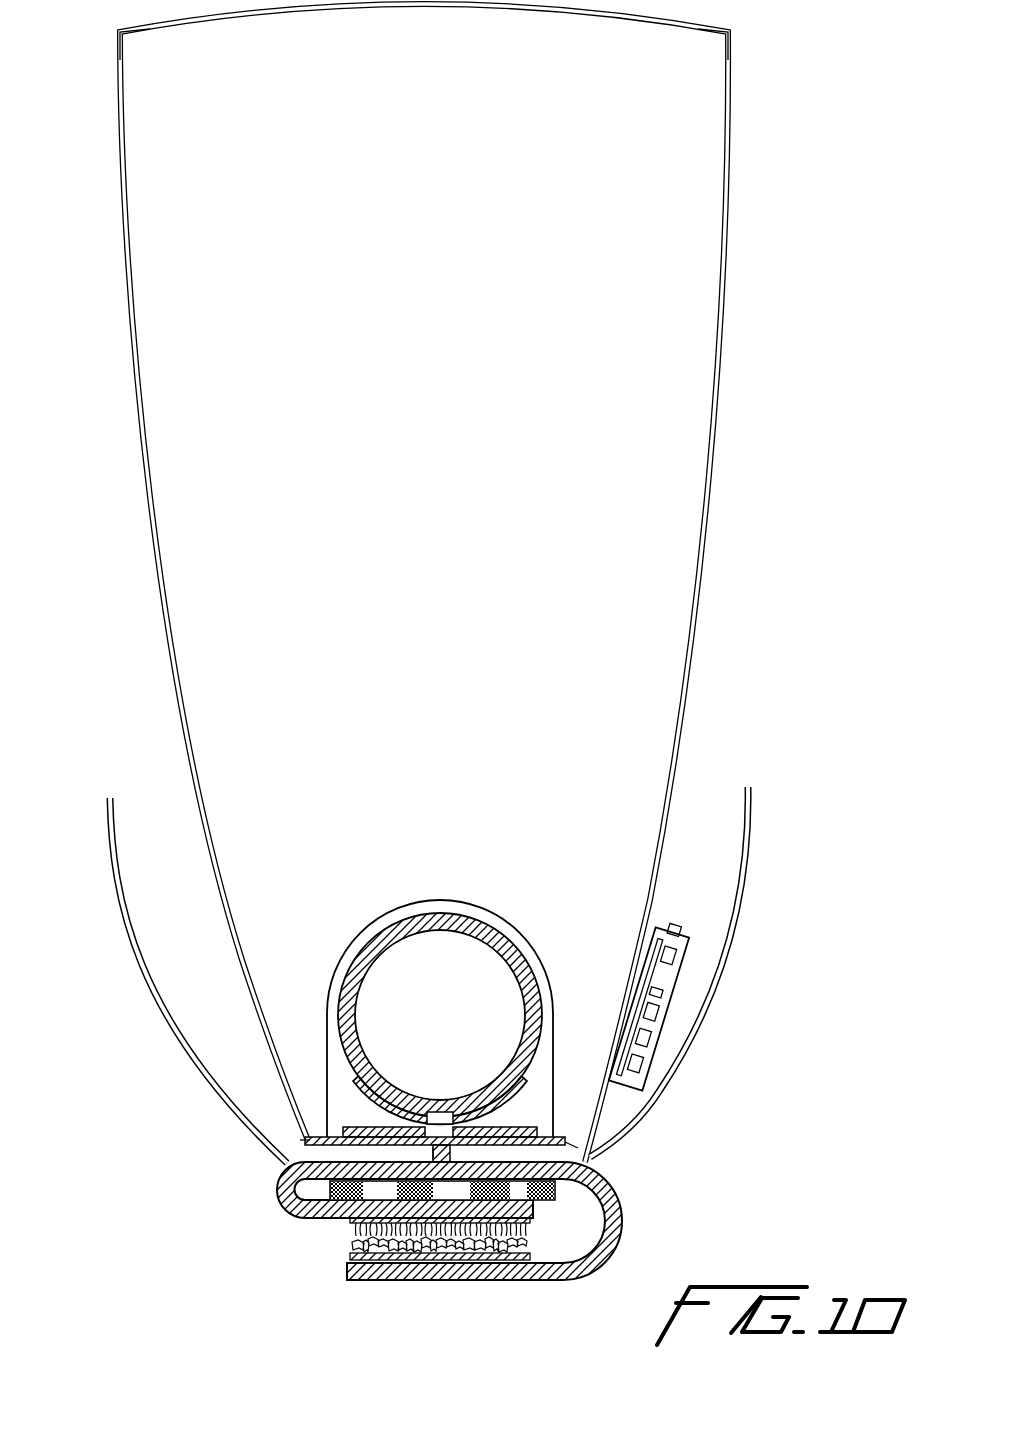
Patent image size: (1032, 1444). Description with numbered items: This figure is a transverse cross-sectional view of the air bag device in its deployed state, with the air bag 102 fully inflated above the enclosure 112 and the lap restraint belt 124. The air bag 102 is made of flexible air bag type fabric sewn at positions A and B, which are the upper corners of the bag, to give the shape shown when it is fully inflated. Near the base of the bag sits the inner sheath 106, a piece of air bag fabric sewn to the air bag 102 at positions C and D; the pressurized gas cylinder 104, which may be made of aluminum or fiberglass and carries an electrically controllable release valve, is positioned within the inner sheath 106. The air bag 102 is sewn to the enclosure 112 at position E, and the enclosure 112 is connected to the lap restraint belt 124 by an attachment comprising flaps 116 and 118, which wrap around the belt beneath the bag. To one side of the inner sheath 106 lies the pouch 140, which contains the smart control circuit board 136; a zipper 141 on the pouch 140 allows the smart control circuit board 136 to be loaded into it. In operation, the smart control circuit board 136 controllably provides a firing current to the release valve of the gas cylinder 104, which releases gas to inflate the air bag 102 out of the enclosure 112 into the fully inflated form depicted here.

The air bag 102 is at (722, 468).
The pressurized gas cylinder 104 is at (461, 1011).
The inner sheath 106 is at (452, 899).
The enclosure 112 is at (748, 886).
The flap 116 is at (564, 1291).
The flap 118 is at (278, 1210).
The lap restraint belt 124 is at (560, 1190).
The smart control circuit board 136 is at (670, 982).
The pouch 140 is at (663, 1033).
The zipper 141 is at (678, 922).
The sewn position A is at (116, 32).
The sewn position B is at (733, 34).
The sewn position C is at (300, 1145).
The sewn position D is at (579, 1146).
The sewn position E is at (428, 1152).